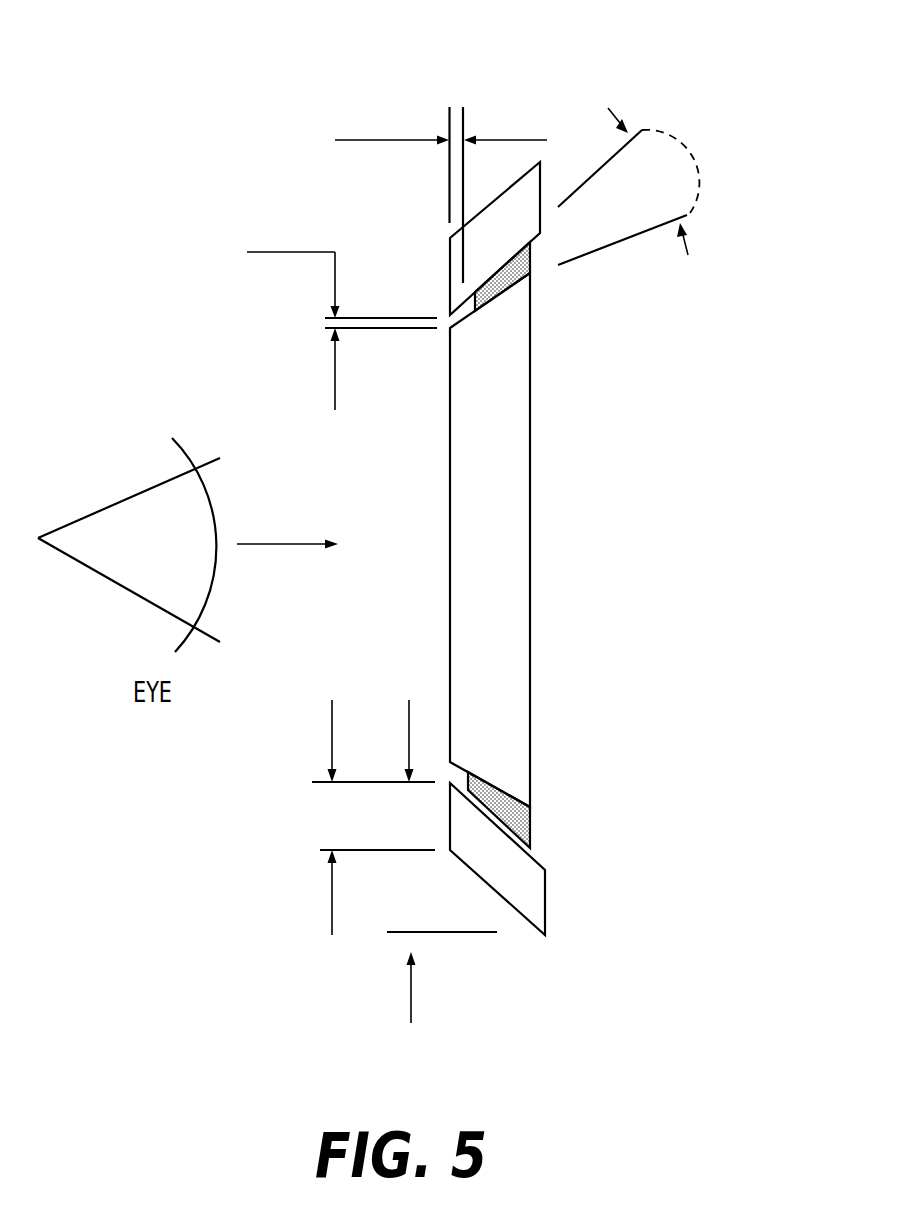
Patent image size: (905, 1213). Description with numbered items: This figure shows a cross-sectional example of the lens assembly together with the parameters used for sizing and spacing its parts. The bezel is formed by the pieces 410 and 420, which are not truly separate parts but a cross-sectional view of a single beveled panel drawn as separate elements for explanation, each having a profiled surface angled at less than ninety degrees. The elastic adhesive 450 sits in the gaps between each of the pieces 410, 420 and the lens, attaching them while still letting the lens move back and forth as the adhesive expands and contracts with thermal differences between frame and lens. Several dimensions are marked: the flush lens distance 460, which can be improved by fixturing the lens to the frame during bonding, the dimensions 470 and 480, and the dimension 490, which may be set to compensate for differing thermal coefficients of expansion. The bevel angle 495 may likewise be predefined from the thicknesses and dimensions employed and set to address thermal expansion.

The piece 410 is at (543, 898).
The piece 420 is at (546, 178).
The elastic adhesive 450 is at (531, 273).
The flush lens distance 460 is at (458, 105).
The dimension 470 is at (332, 935).
The dimension 480 is at (411, 1023).
The dimension 490 is at (322, 323).
The bevel angle 495 is at (687, 150).